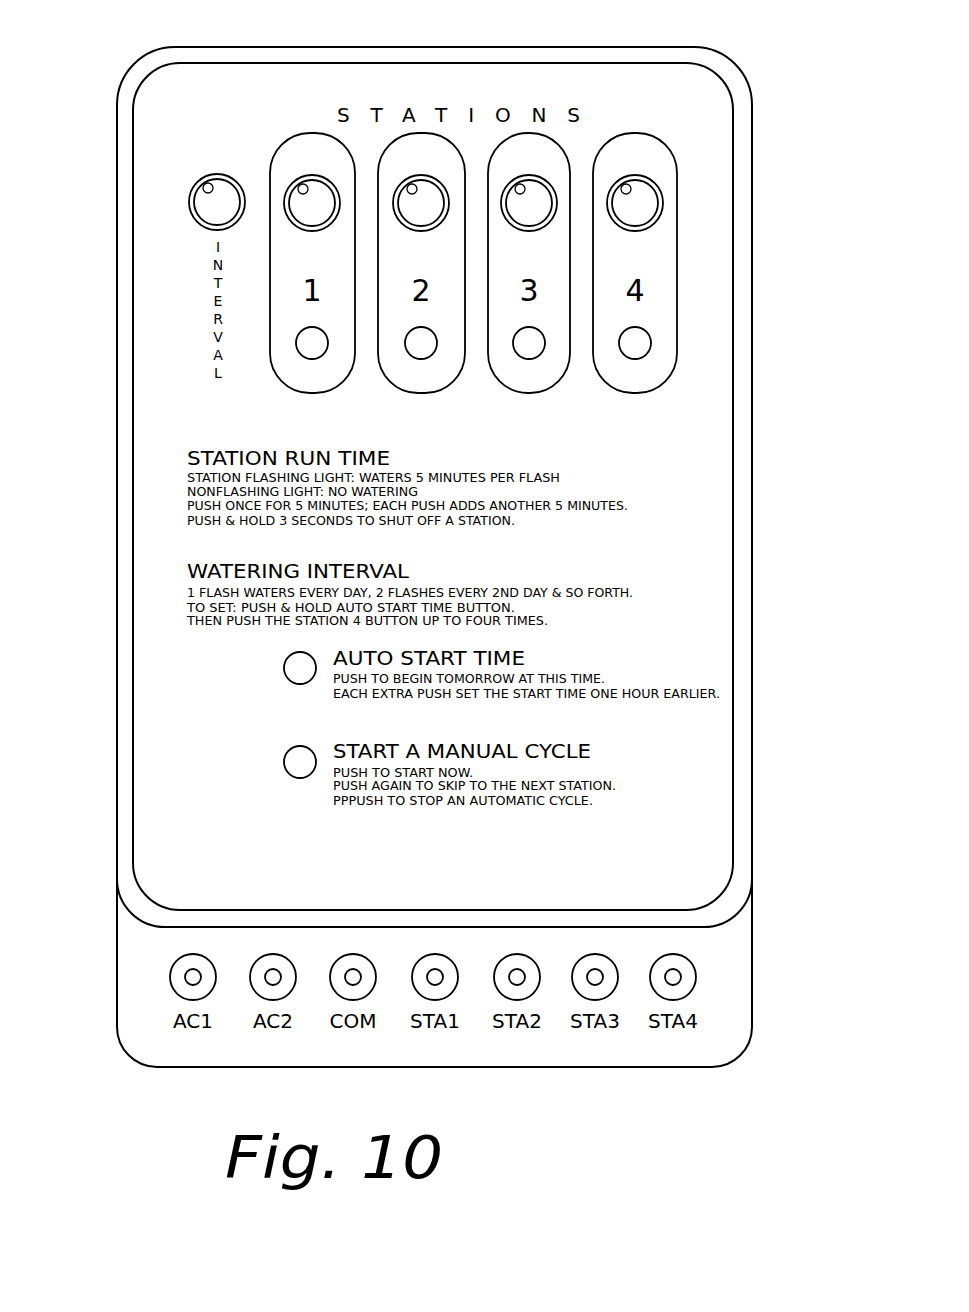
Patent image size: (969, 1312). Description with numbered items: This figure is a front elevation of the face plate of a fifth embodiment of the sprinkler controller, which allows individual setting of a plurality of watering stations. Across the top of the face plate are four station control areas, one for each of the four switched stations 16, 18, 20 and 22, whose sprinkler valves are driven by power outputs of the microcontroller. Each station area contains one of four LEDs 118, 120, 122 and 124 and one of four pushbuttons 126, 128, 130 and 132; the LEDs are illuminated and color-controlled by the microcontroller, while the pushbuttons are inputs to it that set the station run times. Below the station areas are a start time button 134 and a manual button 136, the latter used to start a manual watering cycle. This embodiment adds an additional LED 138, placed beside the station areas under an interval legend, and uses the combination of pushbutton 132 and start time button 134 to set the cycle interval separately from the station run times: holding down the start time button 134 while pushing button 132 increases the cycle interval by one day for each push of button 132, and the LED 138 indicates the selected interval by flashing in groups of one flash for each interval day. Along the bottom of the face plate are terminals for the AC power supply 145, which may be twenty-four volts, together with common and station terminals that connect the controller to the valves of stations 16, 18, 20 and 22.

The switched station 16 is at (448, 985).
The switched station 18 is at (527, 985).
The switched station 20 is at (607, 987).
The switched station 22 is at (690, 967).
The LED 118 is at (322, 212).
The LED 120 is at (407, 198).
The LED 122 is at (537, 198).
The LED 124 is at (647, 203).
The pushbutton 126 is at (318, 353).
The pushbutton 128 is at (428, 352).
The pushbutton 130 is at (535, 348).
The pushbutton 132 is at (640, 340).
The start time button 134 is at (284, 668).
The manual button 136 is at (284, 763).
The LED 138 is at (205, 213).
The AC power supply 145 is at (257, 987).